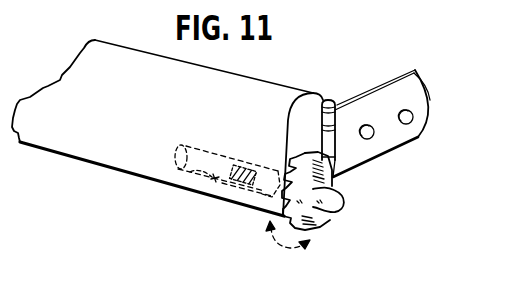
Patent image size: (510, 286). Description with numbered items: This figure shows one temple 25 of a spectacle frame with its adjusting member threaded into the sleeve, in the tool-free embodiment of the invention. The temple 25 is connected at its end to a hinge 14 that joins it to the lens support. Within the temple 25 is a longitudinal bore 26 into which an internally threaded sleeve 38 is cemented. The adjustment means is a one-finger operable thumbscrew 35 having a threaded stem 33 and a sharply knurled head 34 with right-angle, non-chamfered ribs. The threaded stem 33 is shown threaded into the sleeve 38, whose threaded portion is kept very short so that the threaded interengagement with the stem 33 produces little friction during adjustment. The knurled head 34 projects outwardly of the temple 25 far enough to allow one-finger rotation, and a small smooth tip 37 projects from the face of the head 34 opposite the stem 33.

The hinge 14 is at (387, 100).
The temple 25 is at (82, 72).
The longitudinal bore 26 is at (188, 180).
The threaded stem 33 is at (215, 197).
The knurled head 34 is at (322, 218).
The thumbscrew 35 is at (345, 185).
The tip 37 is at (346, 201).
The internally threaded sleeve 38 is at (262, 197).